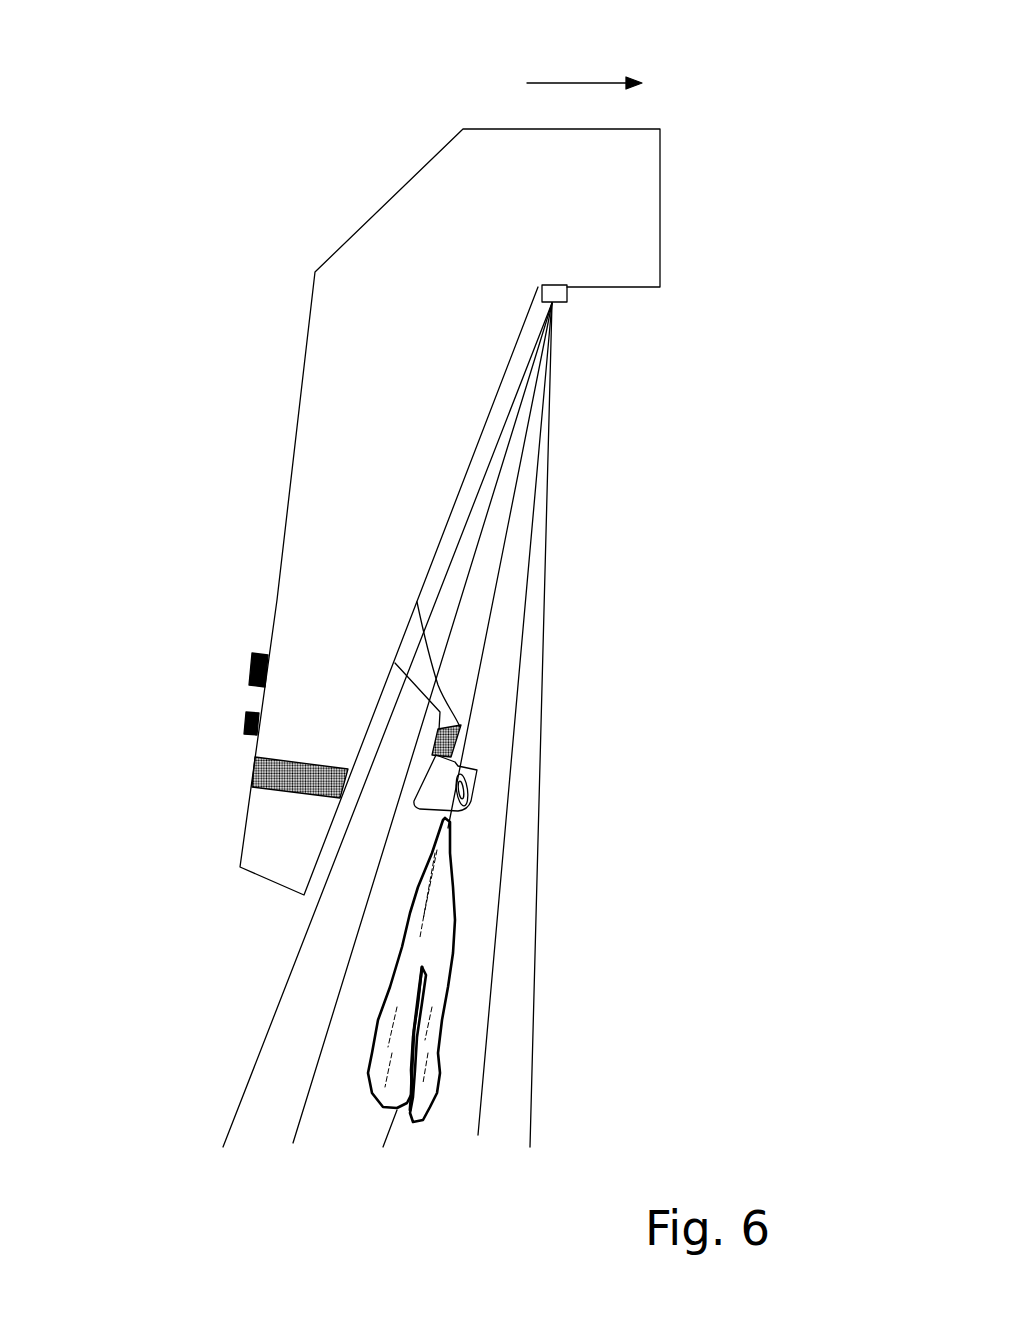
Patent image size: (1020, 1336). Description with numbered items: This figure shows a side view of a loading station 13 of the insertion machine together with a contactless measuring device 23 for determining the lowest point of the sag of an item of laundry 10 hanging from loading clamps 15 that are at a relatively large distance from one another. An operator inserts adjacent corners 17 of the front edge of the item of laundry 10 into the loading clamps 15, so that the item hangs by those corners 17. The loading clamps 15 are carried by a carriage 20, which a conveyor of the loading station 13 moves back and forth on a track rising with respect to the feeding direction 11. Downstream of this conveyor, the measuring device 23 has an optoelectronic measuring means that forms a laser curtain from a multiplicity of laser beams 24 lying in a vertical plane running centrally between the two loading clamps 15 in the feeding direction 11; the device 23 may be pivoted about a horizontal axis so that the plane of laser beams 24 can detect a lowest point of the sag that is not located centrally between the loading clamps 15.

The item of laundry 10 is at (380, 1093).
The feeding direction 11 is at (590, 80).
The loading station 13 is at (346, 194).
The loading clamp 15 is at (425, 803).
The corner 17 is at (470, 797).
The carriage 20 is at (407, 640).
The contactless measuring device 23 is at (567, 297).
The laser beams 24 is at (493, 602).